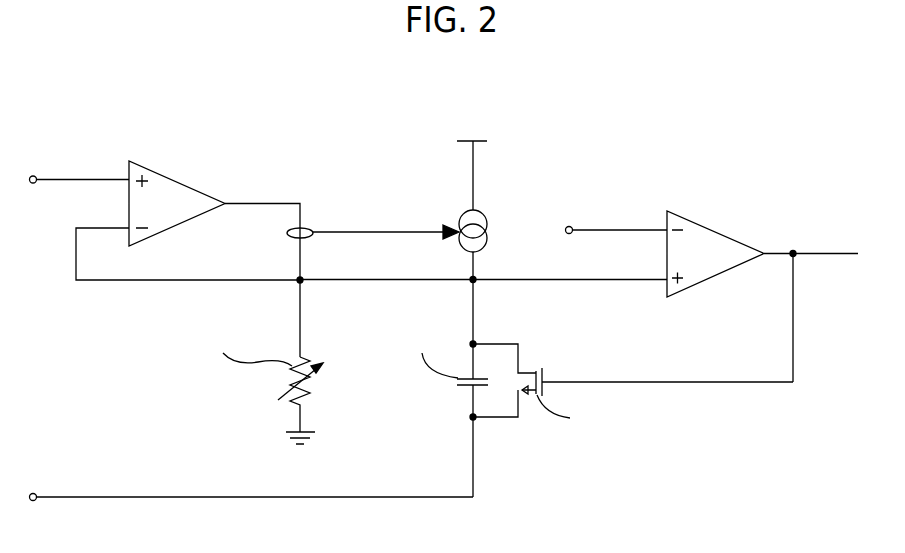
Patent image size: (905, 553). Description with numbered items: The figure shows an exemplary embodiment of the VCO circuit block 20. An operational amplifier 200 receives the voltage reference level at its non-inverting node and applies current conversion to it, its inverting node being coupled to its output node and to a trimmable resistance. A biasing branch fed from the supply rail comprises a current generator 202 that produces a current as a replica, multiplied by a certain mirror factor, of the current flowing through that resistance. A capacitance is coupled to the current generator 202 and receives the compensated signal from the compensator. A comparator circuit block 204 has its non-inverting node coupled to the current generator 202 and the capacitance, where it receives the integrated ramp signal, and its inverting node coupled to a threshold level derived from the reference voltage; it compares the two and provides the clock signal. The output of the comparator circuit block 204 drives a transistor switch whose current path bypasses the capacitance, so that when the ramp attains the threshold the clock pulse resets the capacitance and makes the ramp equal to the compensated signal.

The VCO circuit block 20 is at (660, 174).
The operational amplifier 200 is at (178, 182).
The current generator 202 is at (468, 214).
The comparator circuit block 204 is at (731, 237).